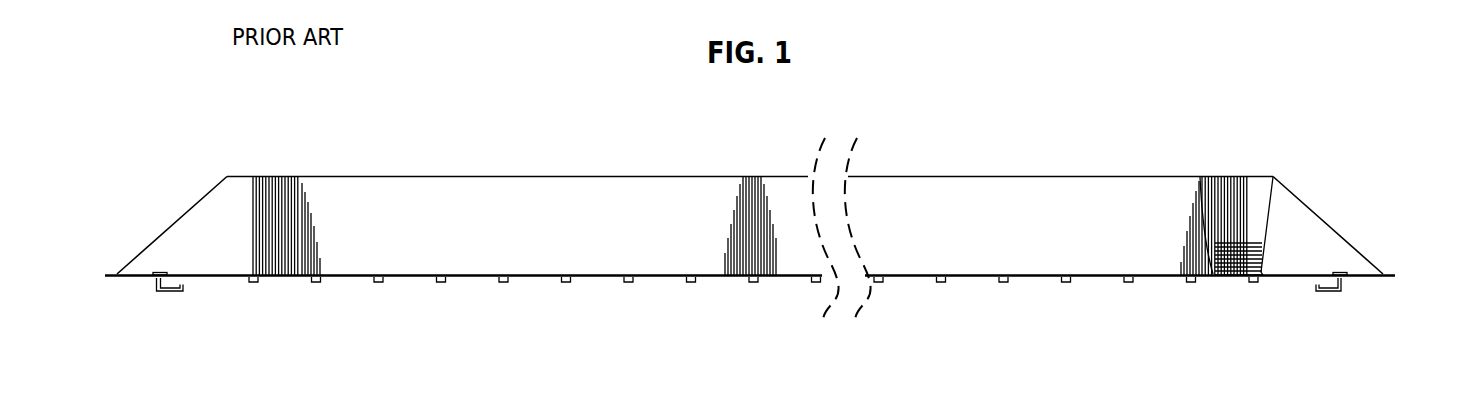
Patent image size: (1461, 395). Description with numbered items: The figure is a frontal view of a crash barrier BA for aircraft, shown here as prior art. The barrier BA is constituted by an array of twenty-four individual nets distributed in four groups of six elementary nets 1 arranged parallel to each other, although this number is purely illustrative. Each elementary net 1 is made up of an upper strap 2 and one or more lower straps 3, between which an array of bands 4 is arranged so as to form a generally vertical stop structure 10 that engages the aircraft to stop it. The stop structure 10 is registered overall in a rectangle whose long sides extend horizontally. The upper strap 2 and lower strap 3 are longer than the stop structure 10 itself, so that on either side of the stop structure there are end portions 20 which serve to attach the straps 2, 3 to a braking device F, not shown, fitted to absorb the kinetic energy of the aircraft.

The elementary net 1 is at (988, 146).
The upper strap 2 is at (1092, 174).
The lower strap 3 is at (1092, 281).
The band 4 is at (284, 231).
The stop structure 10 is at (714, 222).
The end portion 20 is at (172, 224).
The braking device F is at (111, 268).
The barrier BA is at (1284, 135).